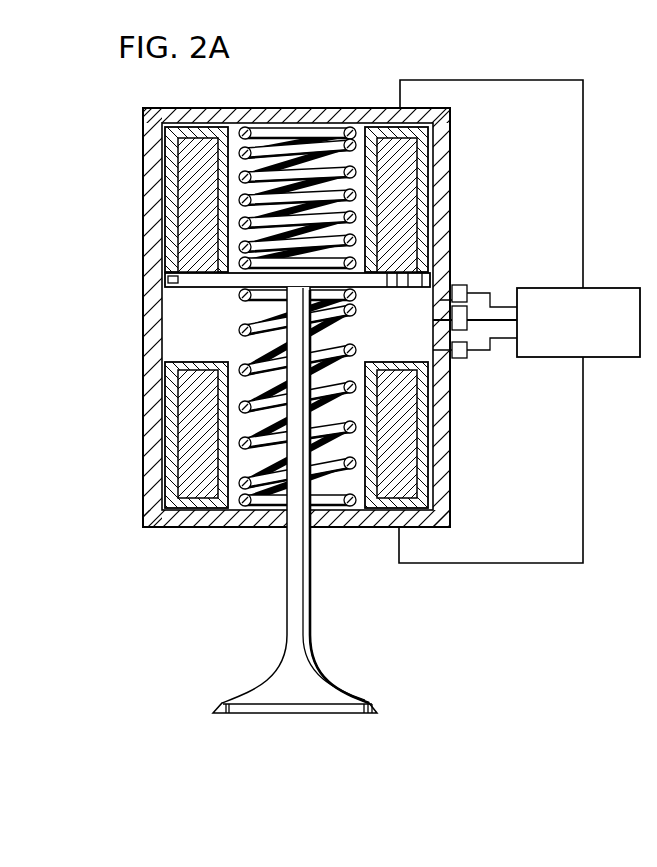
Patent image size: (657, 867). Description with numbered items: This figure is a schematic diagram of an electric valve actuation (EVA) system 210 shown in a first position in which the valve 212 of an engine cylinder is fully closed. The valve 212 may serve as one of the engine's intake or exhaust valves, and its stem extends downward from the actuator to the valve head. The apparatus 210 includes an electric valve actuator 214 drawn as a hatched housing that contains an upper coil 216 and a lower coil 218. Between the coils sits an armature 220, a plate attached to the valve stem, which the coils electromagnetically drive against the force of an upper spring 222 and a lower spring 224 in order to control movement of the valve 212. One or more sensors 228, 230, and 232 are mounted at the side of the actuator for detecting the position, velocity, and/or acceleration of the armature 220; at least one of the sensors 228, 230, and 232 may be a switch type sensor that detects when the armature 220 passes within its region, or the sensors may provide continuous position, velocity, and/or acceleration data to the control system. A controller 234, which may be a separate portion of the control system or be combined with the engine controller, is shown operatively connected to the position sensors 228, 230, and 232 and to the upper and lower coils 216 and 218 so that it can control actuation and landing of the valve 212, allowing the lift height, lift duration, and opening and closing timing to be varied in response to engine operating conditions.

The EVA system 210 is at (446, 62).
The valve 212 is at (340, 688).
The electric valve actuator 214 is at (138, 324).
The upper coil 216 is at (190, 200).
The lower coil 218 is at (187, 432).
The armature 220 is at (190, 278).
The upper spring 222 is at (300, 140).
The lower spring 224 is at (328, 465).
The sensor 228 is at (467, 318).
The sensor 230 is at (458, 360).
The sensor 232 is at (458, 285).
The controller 234 is at (613, 358).